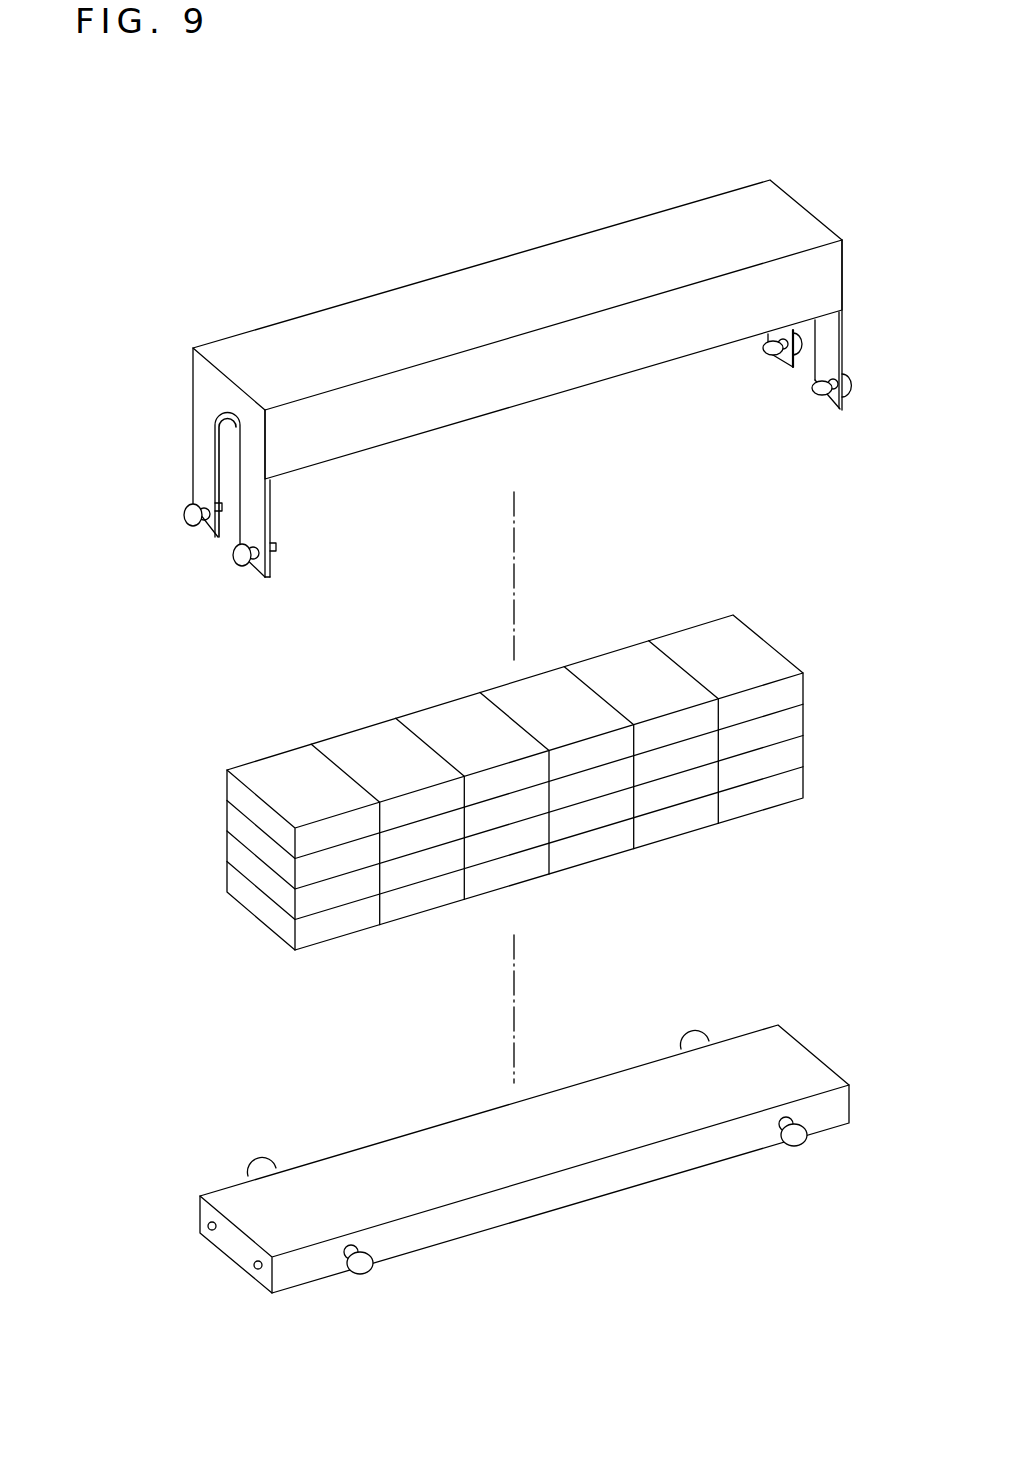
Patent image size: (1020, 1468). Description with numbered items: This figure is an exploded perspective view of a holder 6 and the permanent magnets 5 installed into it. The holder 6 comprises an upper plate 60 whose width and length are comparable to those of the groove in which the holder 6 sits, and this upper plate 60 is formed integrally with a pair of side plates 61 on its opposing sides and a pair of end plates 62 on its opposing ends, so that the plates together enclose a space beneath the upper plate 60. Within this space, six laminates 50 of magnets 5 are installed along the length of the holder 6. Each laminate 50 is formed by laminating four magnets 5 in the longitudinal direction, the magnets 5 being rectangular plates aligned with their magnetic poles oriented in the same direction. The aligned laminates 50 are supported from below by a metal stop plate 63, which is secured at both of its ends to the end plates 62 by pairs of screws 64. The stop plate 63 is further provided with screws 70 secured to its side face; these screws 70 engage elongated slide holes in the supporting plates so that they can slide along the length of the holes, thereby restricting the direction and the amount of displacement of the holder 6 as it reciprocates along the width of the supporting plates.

The holder 6 is at (509, 384).
The upper plate 60 is at (488, 297).
The side plate 61 is at (598, 368).
The end plate 62 is at (200, 432).
The screw 64 is at (182, 518).
The laminate 50 is at (450, 800).
The permanent magnet 5 is at (227, 791).
The stop plate 63 is at (550, 1151).
The screw 70 is at (257, 1160).